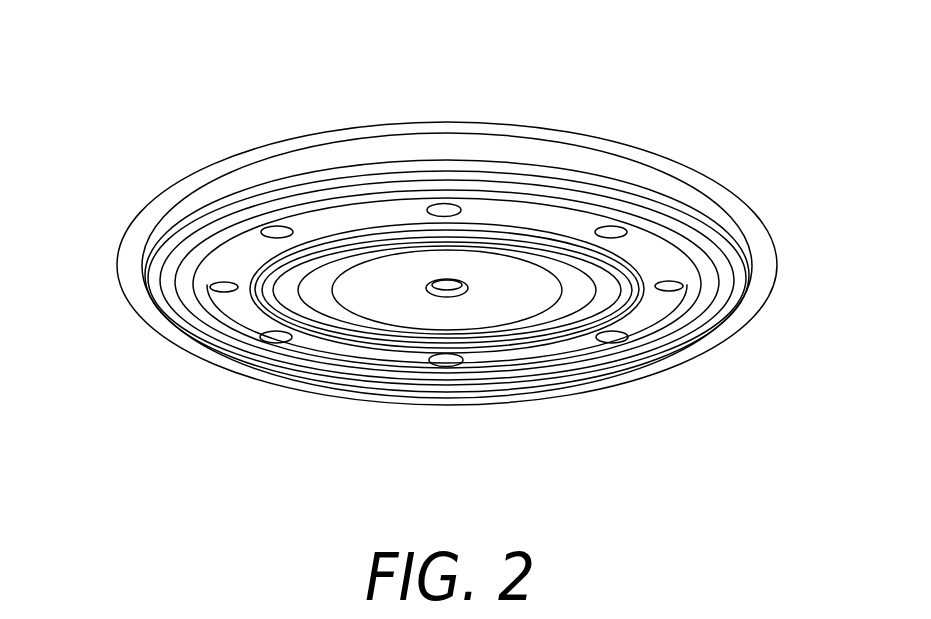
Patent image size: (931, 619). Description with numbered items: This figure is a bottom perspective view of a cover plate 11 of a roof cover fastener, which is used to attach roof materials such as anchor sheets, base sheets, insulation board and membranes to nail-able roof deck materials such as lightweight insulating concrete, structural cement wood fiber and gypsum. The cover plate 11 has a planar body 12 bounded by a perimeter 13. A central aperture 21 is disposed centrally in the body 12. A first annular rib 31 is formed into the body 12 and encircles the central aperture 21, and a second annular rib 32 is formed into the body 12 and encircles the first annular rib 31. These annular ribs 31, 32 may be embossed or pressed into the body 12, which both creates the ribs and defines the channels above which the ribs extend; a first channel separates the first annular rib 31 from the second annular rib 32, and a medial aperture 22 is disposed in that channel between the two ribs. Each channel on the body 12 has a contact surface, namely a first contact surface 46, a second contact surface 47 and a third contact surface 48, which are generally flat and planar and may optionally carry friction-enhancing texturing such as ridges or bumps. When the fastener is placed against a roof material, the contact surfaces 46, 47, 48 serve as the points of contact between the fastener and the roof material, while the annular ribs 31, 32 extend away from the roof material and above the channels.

The cover plate 11 is at (448, 249).
The planar body 12 is at (778, 262).
The perimeter 13 is at (523, 122).
The central aperture 21 is at (452, 295).
The medial aperture 22 is at (278, 232).
The first annular rib 31 is at (280, 340).
The second annular rib 32 is at (190, 243).
The first contact surface 46 is at (642, 320).
The second contact surface 47 is at (413, 298).
The third contact surface 48 is at (738, 218).